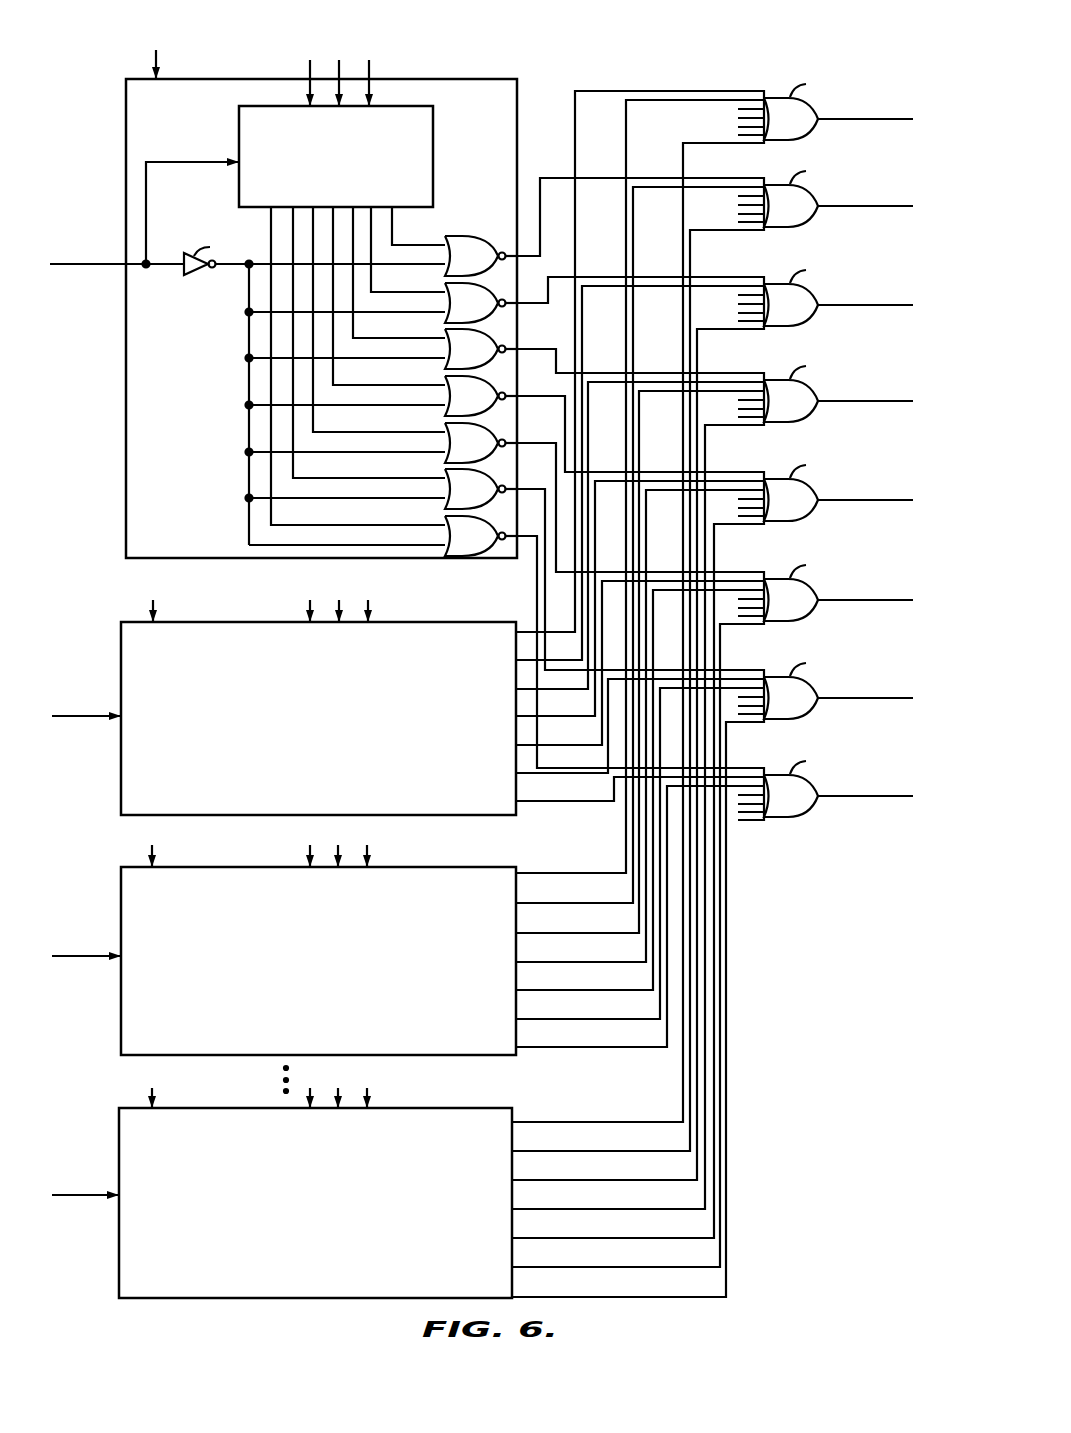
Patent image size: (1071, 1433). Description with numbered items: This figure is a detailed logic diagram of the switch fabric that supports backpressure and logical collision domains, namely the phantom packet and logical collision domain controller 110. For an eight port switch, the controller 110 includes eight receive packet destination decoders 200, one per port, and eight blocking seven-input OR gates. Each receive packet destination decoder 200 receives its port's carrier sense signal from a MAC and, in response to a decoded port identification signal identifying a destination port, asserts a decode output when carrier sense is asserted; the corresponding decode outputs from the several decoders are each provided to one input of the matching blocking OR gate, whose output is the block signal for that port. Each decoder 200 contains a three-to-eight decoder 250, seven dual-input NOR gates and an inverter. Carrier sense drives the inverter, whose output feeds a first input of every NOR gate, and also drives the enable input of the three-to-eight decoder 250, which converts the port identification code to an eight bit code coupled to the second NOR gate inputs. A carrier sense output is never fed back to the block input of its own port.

The phantom packet and logical collision domain controller 110 is at (750, 70).
The receive packet destination decoder 200 is at (448, 79).
The 3-to-8 decoder 250 is at (433, 132).